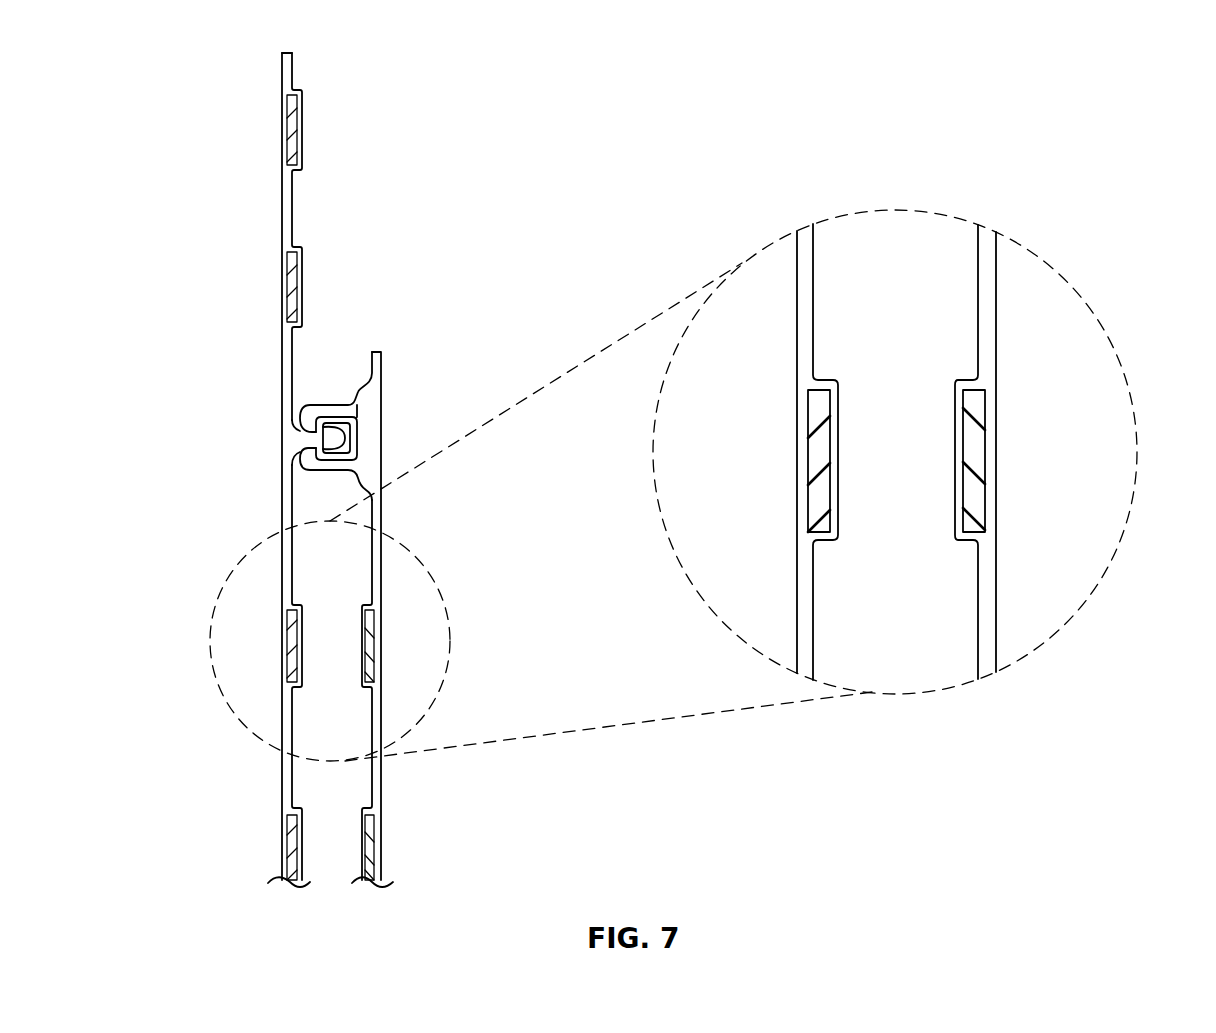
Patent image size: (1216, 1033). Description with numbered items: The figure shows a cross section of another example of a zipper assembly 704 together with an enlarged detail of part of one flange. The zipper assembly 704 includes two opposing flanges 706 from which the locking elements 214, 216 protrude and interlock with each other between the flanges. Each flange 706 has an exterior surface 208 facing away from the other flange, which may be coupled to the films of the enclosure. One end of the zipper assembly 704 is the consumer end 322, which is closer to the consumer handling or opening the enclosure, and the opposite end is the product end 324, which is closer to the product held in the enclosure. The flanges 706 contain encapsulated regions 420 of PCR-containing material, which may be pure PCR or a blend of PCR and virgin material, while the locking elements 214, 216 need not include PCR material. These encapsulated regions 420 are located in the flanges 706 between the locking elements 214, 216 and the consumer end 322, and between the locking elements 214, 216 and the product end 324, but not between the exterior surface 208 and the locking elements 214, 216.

The zipper assembly 704 is at (187, 136).
The consumer end 322 is at (348, 56).
The product end 324 is at (345, 890).
The exterior surface 208 is at (270, 329).
The flange 706 is at (287, 353).
The locking element 214 is at (336, 441).
The locking element 216 is at (308, 463).
The encapsulated region of PCR-containing material 420 is at (992, 477).